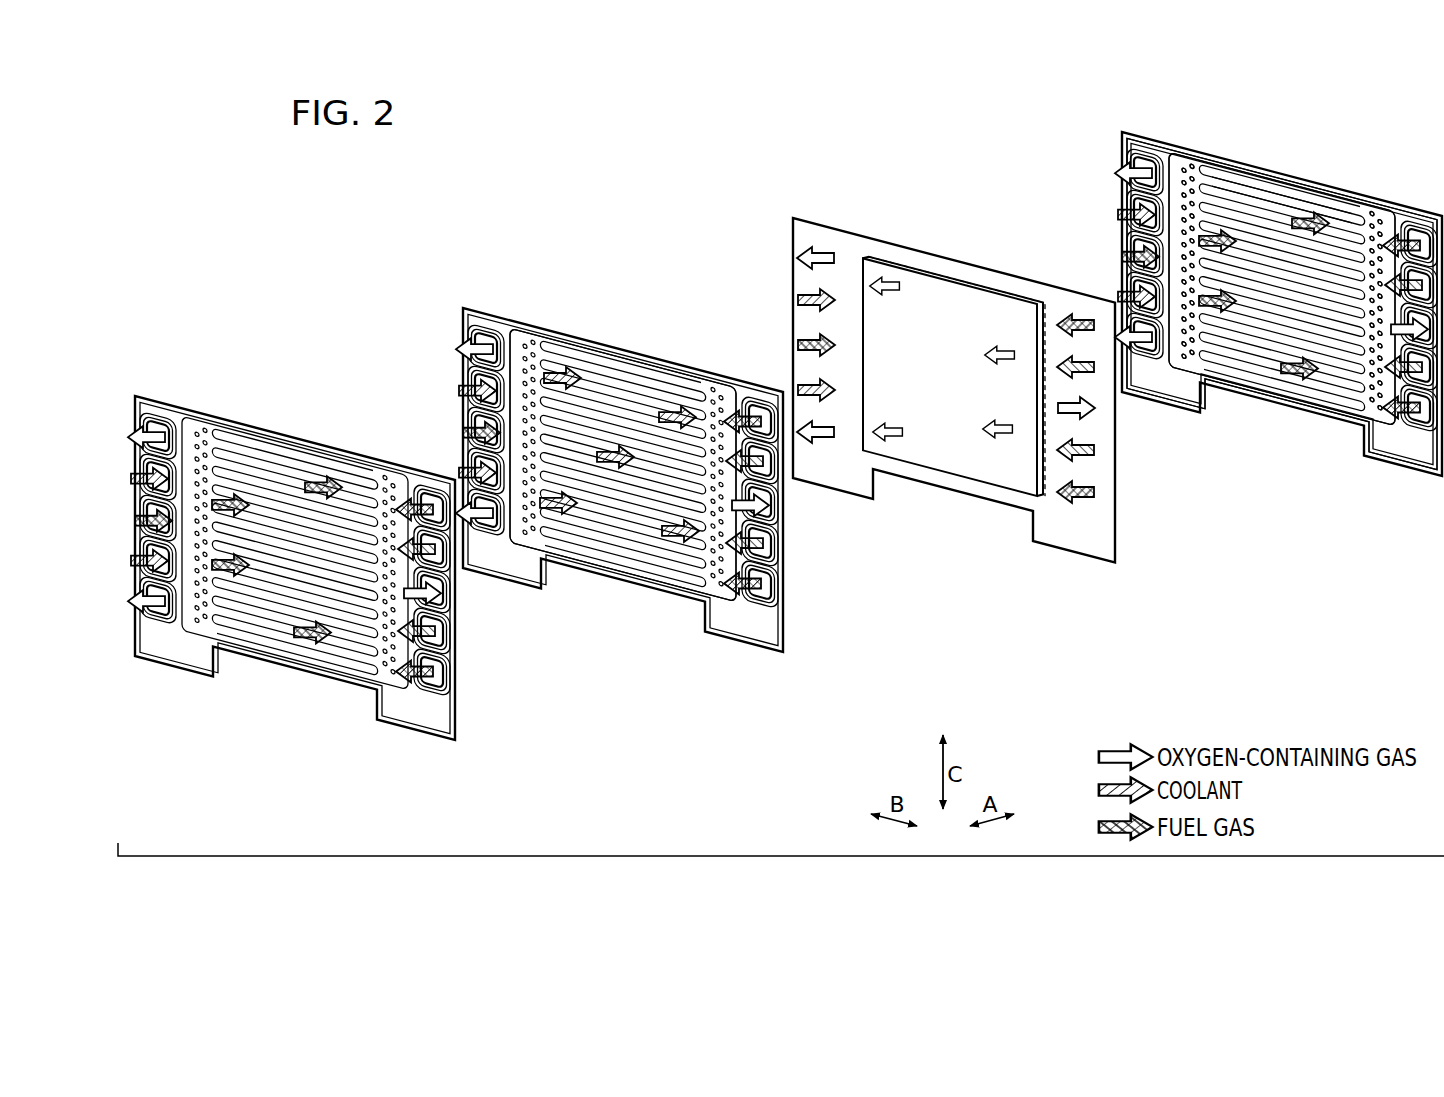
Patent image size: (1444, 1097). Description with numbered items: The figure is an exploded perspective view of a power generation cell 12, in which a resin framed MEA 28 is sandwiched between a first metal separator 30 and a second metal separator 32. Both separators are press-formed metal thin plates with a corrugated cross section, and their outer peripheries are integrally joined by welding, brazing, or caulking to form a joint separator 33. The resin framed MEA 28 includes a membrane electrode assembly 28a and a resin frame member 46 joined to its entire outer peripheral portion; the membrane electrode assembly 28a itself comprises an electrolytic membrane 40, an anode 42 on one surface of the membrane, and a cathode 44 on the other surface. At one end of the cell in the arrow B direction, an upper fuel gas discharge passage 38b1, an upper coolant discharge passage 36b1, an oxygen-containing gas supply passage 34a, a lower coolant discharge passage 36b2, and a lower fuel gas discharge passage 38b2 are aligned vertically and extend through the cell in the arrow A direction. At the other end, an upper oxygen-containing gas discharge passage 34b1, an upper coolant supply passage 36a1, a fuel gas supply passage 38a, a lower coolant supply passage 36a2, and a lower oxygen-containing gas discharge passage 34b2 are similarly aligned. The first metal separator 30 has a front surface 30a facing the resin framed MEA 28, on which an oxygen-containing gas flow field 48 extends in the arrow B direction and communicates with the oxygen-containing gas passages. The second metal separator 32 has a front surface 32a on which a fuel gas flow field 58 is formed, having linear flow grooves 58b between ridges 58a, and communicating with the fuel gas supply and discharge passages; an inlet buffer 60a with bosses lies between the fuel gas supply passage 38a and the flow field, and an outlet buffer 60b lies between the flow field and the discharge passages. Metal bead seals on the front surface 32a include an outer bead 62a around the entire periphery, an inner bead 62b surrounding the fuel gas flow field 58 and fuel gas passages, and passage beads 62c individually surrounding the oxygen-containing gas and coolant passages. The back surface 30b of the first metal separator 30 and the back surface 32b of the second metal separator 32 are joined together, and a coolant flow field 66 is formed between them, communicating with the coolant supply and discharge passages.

The power generation cell 12 is at (755, 212).
The resin framed MEA 28 is at (962, 156).
The membrane electrode assembly 28a is at (946, 278).
The first metal separator 30 is at (460, 312).
The front surface 30a is at (770, 614).
The back surface 30b is at (765, 630).
The second metal separator 32 is at (214, 420).
The front surface 32a is at (296, 640).
The back surface 32b is at (340, 645).
The joint separator 33 is at (338, 272).
The oxygen-containing gas supply passage 34a is at (445, 598).
The upper oxygen-containing gas discharge passage 34b1 is at (152, 426).
The lower oxygen-containing gas discharge passage 34b2 is at (158, 605).
The upper coolant supply passage 36a1 is at (160, 470).
The lower coolant supply passage 36a2 is at (160, 560).
The upper coolant discharge passage 36b1 is at (445, 555).
The lower coolant discharge passage 36b2 is at (445, 640).
The fuel gas supply passage 38a is at (180, 520).
The upper fuel gas discharge passage 38b1 is at (434, 500).
The lower fuel gas discharge passage 38b2 is at (432, 680).
The electrolytic membrane 40 is at (953, 460).
The anode 42 is at (908, 262).
The cathode 44 is at (928, 452).
The resin frame member 46 is at (862, 255).
The oxygen-containing gas flow field 48 is at (647, 408).
The fuel gas flow field 58 is at (1325, 107).
The ridges 58a is at (1243, 185).
The linear flow grooves 58b is at (1290, 200).
The inlet buffer 60a is at (1182, 175).
The outlet buffer 60b is at (1370, 395).
The outer bead 62a is at (1377, 455).
The inner bead 62b is at (1363, 357).
The passage beads 62c is at (1392, 318).
The coolant flow field 66 is at (603, 395).